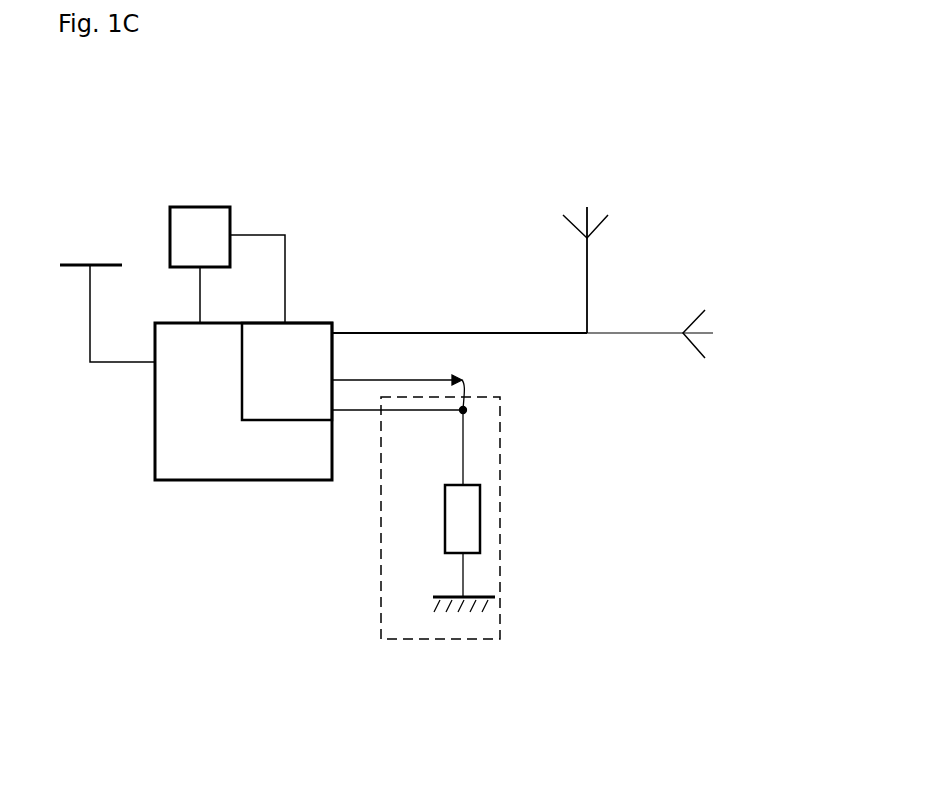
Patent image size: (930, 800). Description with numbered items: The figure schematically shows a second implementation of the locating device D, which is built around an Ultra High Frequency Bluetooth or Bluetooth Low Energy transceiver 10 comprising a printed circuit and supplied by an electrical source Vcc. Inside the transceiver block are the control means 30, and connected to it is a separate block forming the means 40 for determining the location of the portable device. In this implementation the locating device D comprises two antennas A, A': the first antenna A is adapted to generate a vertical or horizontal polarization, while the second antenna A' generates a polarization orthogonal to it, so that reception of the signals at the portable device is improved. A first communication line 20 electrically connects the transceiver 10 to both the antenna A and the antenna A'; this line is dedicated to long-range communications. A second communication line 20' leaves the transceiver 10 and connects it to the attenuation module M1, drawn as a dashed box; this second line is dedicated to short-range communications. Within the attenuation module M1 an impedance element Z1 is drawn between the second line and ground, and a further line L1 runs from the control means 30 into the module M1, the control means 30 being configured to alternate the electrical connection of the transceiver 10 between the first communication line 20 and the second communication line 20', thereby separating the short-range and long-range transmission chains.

The transceiver 10 is at (214, 462).
The control means 30 is at (304, 388).
The location determining means 40 is at (218, 252).
The electrical source Vcc is at (88, 313).
The first communication line 20 is at (522, 372).
The second communication line 20' is at (379, 475).
The first antenna A is at (636, 231).
The second antenna A' is at (750, 303).
The locating device D is at (236, 152).
The control line L1 is at (398, 380).
The impedance element Z1 is at (449, 511).
The attenuation module M1 is at (462, 642).